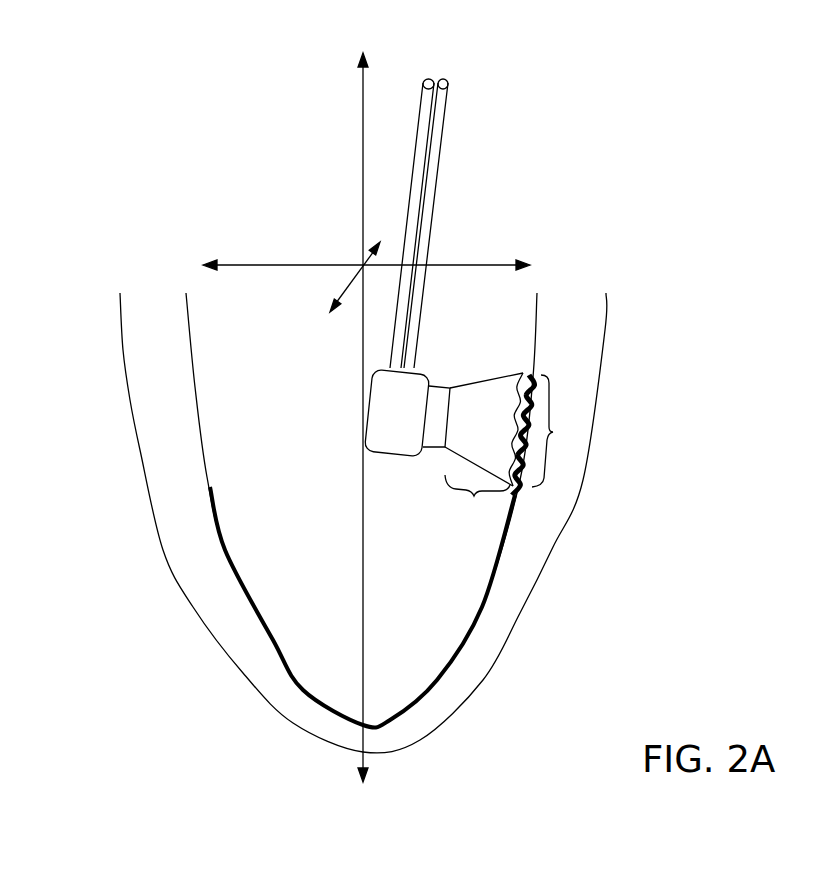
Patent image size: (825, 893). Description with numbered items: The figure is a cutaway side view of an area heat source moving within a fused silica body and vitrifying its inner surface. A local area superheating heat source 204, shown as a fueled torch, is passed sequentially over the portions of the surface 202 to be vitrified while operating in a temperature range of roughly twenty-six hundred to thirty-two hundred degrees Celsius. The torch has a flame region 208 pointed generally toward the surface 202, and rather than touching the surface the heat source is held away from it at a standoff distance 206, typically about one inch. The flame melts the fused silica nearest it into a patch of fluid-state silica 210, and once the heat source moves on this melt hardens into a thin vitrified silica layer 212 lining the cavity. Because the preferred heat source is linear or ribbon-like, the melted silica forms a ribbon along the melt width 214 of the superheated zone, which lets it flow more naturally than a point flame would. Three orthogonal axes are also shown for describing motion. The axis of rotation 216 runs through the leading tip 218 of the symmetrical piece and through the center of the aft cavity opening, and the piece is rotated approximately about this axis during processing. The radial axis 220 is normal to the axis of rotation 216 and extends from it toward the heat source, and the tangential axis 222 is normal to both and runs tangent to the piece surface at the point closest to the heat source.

The surface 202 is at (532, 353).
The local area superheating heat source 204 is at (373, 457).
The standoff distance 206 is at (473, 494).
The flame region 208 is at (490, 378).
The patch of fluid-state silica 210 is at (533, 373).
The thin vitrified silica layer 212 is at (483, 600).
The melt width 214 is at (553, 432).
The axis of rotation 216 is at (363, 342).
The leading tip 218 is at (357, 752).
The radial axis 220 is at (455, 265).
The tangential axis 222 is at (342, 293).